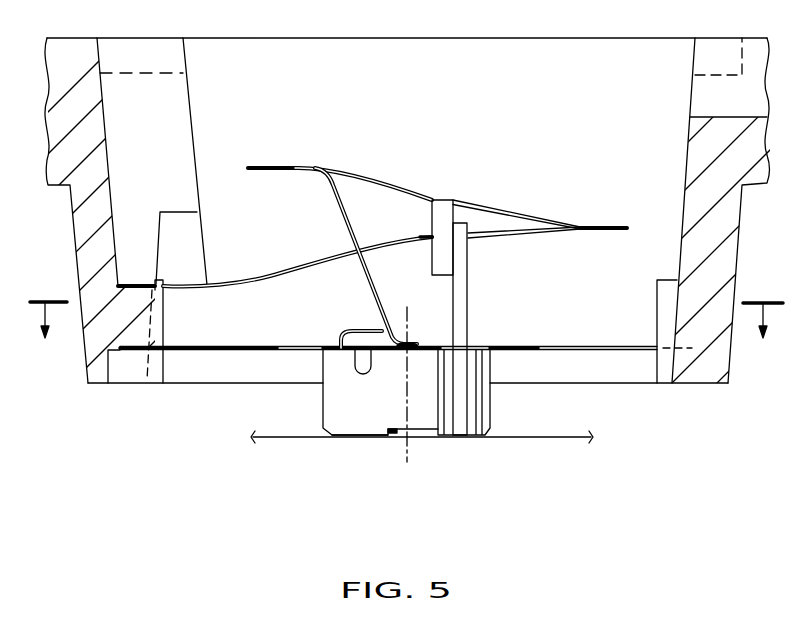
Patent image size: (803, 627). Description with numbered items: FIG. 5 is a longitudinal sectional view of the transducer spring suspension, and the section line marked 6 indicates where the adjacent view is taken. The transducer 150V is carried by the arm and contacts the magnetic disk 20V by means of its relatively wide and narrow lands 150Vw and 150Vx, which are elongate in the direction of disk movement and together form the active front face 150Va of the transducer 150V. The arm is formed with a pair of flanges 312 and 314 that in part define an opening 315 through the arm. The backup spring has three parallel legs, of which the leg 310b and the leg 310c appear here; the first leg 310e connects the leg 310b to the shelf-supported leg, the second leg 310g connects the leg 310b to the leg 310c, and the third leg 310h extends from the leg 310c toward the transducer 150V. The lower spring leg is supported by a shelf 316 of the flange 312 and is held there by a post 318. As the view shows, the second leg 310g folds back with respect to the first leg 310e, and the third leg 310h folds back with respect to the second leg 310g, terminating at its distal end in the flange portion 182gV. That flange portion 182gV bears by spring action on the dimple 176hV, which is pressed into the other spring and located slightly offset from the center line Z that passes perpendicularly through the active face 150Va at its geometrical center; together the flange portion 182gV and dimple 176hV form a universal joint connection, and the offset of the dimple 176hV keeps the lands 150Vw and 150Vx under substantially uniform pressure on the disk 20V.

The opening 315 is at (599, 91).
The flange 312 is at (74, 228).
The flange 314 is at (742, 214).
The post 318 is at (173, 210).
The shelf 316 is at (143, 290).
The first leg 310e is at (298, 271).
The leg 310c is at (272, 165).
The third leg 310h is at (343, 218).
The second leg 310g is at (467, 200).
The leg 310b is at (603, 227).
The narrow transducer land 150Vx is at (475, 440).
The transducer 150V is at (323, 408).
The wide transducer land 150Vw is at (362, 440).
The active front face 150Va is at (395, 436).
The magnetic disk 20V is at (570, 440).
The center line Z is at (407, 447).
The flange portion 182gV is at (412, 340).
The dimple 176hV is at (420, 343).
The section line 6- 6 is at (406, 336).